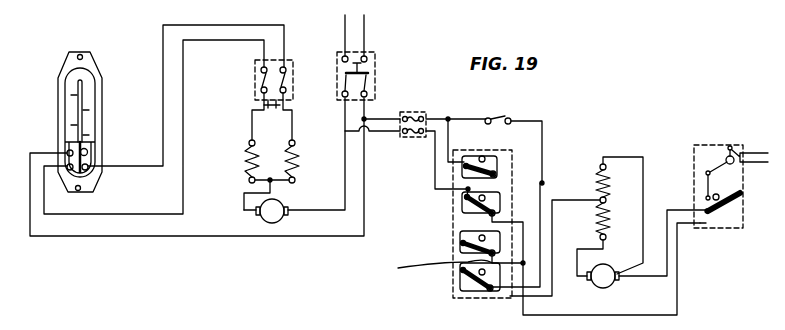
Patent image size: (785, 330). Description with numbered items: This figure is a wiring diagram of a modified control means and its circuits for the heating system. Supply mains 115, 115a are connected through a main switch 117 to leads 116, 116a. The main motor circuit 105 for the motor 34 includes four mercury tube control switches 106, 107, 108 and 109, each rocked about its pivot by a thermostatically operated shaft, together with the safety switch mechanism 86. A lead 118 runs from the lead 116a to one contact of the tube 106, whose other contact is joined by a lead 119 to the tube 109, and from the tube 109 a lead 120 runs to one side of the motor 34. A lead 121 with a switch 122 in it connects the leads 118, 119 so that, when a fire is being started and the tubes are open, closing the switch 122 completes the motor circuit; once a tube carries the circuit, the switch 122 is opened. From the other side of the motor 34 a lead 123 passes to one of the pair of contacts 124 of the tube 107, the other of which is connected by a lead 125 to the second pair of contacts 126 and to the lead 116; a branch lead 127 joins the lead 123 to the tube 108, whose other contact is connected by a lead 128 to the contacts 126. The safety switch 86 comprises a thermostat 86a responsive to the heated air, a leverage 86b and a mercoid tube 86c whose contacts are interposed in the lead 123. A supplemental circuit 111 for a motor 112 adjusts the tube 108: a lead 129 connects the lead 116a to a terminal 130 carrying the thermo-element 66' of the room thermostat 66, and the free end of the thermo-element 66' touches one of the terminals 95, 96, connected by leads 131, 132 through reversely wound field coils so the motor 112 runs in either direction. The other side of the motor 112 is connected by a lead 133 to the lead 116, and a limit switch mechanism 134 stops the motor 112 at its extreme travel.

The room thermostat 66 is at (67, 122).
The thermo-element 66' is at (110, 139).
The terminal 130 is at (66, 152).
The lead 132 is at (130, 160).
The terminal 95 is at (68, 171).
The terminal 96 is at (90, 170).
The lead 131 is at (154, 127).
The lead 129 is at (134, 237).
The limit switch mechanism 134 is at (255, 76).
The lead 133 is at (298, 178).
The supplemental circuit 111 is at (256, 216).
The motor 112 is at (286, 217).
The supply main 115 is at (344, 30).
The supply main 115a is at (365, 34).
The main switch 117 is at (370, 80).
The lead 116a is at (369, 117).
The lead 116 is at (345, 128).
The lead 118 is at (450, 113).
The switch 122 is at (502, 111).
The lead 121 is at (525, 121).
The lead 125 is at (436, 162).
The control switch 106 is at (486, 157).
The lead 119 is at (552, 190).
The pair of contacts 126 is at (462, 197).
The control switch 107 is at (462, 207).
The pair of contacts 124 is at (497, 214).
The lead 128 is at (460, 242).
The control switch 108 is at (460, 250).
The branch lead 127 is at (452, 266).
The control switch 109 is at (460, 280).
The lead 120 is at (552, 292).
The motor circuit 105 is at (611, 270).
The motor 34 is at (608, 266).
The safety switch mechanism 86 is at (694, 160).
The leverage 86b is at (709, 170).
The thermostat 86a is at (750, 153).
The mercoid tube 86c is at (741, 196).
The lead 123 is at (672, 202).